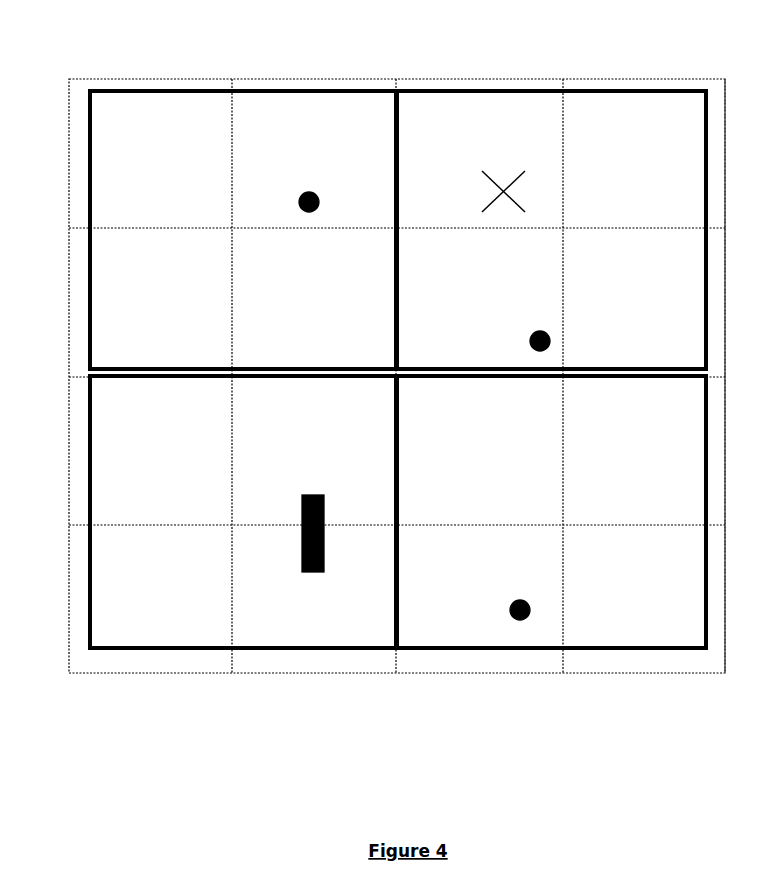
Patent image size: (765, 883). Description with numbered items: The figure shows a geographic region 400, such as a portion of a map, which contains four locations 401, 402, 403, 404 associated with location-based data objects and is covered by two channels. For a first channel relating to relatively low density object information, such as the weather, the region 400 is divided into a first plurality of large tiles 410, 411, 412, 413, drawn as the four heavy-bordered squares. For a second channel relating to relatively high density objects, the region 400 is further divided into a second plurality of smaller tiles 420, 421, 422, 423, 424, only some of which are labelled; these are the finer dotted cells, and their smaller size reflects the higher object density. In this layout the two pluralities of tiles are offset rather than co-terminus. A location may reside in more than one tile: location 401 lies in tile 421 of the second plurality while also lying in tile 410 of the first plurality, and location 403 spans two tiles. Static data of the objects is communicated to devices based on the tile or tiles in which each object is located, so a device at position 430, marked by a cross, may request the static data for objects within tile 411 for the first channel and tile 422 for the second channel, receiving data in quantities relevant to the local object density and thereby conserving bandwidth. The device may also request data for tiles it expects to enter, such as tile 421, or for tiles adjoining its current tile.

The geographic region 400 is at (180, 700).
The location 401 is at (313, 193).
The location 402 is at (529, 331).
The location 403 is at (310, 522).
The location 404 is at (525, 601).
The tile of first plurality 410 is at (243, 230).
The tile of first plurality 411 is at (551, 230).
The tile of first plurality 412 is at (243, 512).
The tile of first plurality 413 is at (551, 512).
The tile of second plurality 420 is at (150, 79).
The tile of second plurality 421 is at (307, 79).
The tile of second plurality 422 is at (473, 79).
The tile of second plurality 423 is at (638, 79).
The tile of second plurality 424 is at (69, 295).
The device position 430 is at (503, 180).